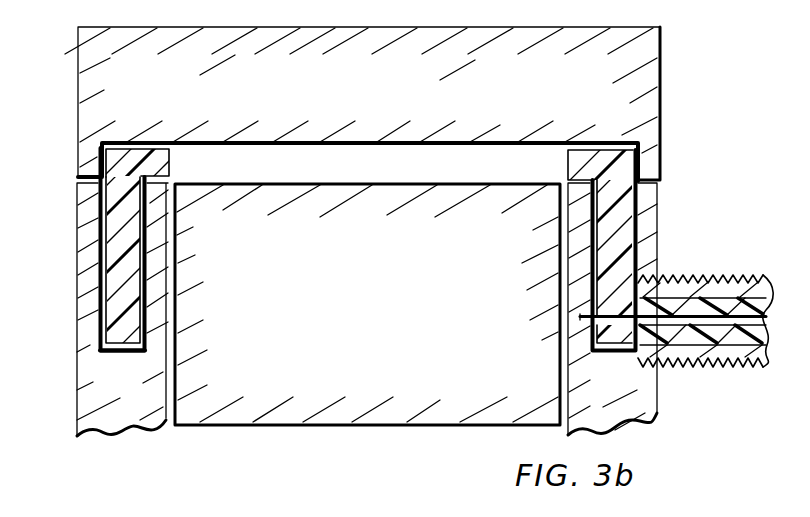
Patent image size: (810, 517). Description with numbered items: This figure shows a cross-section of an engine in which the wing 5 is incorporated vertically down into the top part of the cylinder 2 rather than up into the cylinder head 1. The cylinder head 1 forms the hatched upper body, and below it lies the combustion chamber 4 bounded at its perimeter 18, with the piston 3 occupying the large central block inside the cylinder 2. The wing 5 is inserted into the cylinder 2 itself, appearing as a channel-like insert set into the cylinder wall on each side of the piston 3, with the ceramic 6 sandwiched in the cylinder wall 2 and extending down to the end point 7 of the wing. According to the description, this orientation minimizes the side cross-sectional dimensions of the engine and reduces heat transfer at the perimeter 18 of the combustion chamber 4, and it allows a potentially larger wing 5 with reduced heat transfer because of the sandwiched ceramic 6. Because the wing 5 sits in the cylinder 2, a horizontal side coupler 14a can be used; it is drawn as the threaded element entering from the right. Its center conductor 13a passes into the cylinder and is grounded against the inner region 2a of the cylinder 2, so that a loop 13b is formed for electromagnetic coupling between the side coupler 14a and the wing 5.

The cylinder head 1 is at (362, 104).
The cylinder 2 is at (122, 309).
The inner region of the cylinder 2a is at (576, 352).
The piston 3 is at (367, 304).
The combustion chamber 4 is at (310, 170).
The wing 5 is at (103, 214).
The ceramic 6 is at (122, 272).
The wing end point 7 is at (110, 352).
The perimeter of combustion chamber 18 is at (175, 163).
The center conductor 13a is at (607, 351).
The loop 13b is at (623, 358).
The side coupler 14a is at (717, 277).